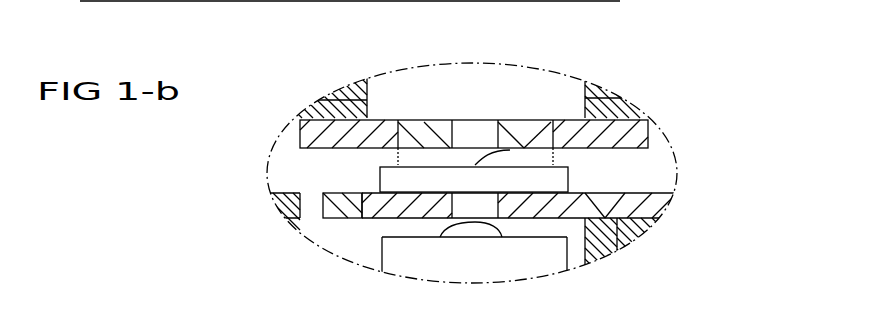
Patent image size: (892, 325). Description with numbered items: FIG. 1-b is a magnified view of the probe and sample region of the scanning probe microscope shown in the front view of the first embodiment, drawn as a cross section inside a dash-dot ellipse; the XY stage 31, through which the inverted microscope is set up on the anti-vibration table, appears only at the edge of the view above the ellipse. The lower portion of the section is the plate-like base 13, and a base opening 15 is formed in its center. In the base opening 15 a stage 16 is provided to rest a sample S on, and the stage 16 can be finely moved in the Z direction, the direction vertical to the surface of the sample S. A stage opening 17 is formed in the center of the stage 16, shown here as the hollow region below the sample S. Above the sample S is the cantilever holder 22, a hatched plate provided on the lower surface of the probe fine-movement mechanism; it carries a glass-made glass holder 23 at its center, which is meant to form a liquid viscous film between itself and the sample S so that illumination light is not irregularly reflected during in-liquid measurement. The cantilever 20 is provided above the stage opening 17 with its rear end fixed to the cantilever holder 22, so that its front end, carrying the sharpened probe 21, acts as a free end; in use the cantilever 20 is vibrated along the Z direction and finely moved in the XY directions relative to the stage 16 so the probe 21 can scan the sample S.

The base 13 is at (283, 197).
The base opening 15 is at (339, 218).
The stage 16 is at (577, 192).
The stage opening 17 is at (485, 242).
The cantilever 20 is at (505, 152).
The probe 21 is at (456, 157).
The cantilever holder 22 is at (640, 138).
The glass holder 23 is at (475, 165).
The sample S is at (390, 178).
The XY stage 31 is at (628, 2).